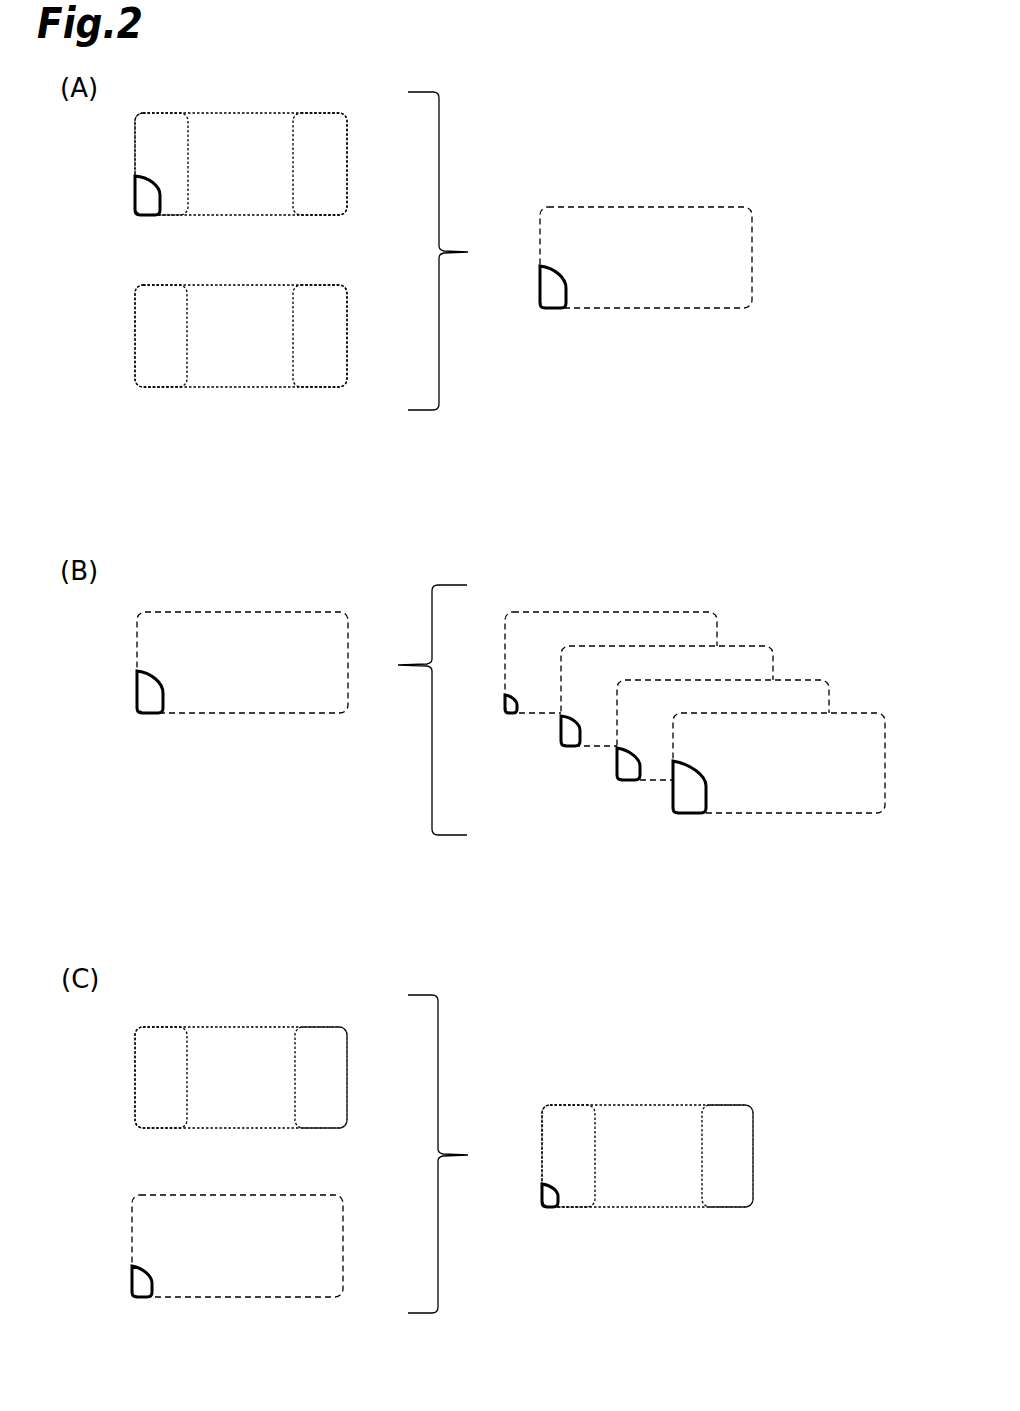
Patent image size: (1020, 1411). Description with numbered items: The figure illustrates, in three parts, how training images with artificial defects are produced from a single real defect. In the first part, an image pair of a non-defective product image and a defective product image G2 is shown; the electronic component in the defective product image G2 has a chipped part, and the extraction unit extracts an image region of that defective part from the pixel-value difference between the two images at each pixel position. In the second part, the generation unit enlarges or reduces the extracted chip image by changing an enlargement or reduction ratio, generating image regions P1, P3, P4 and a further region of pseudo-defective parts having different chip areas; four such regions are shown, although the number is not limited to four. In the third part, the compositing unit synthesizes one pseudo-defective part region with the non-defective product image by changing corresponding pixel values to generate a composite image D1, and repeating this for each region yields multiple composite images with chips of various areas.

The defective product image G2 is at (349, 148).
The image region of pseudo-defective part P1 is at (505, 706).
The image region of pseudo-defective part P3 is at (617, 773).
The image region of pseudo-defective part P4 is at (673, 806).
The composite image D1 is at (755, 1141).